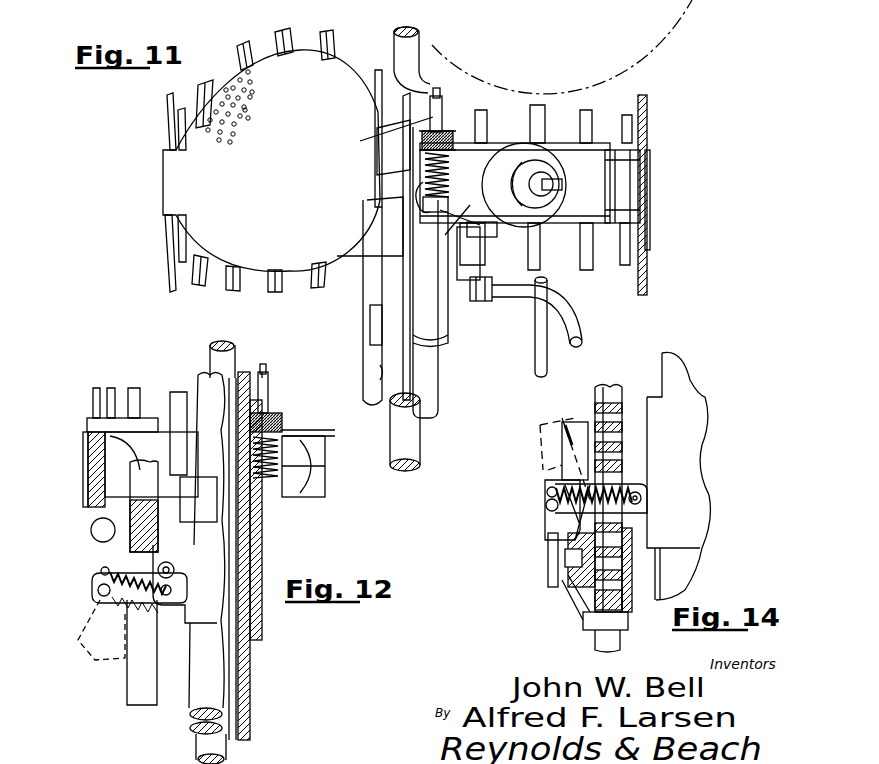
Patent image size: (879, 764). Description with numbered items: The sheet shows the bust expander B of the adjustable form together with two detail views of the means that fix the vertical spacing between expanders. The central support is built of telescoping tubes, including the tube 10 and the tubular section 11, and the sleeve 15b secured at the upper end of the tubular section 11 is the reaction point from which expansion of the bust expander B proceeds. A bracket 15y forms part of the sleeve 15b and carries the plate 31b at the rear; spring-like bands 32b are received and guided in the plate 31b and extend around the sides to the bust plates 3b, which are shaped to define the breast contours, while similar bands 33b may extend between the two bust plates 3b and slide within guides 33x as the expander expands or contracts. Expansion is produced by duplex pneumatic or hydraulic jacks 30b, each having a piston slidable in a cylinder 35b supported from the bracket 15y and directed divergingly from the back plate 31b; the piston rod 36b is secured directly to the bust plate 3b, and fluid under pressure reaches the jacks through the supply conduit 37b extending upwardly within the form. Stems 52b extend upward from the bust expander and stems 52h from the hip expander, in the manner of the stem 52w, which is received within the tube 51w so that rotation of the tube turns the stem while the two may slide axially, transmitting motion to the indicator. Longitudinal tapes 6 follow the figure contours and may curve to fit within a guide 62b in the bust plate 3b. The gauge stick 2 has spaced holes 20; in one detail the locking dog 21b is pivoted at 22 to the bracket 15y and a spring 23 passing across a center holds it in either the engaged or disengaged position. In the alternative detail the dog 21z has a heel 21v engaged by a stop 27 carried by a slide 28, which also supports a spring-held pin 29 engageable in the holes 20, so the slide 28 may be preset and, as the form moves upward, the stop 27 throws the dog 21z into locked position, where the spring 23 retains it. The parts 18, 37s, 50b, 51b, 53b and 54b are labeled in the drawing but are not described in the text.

In FIG. 11, the bust expander B is at (163, 185).
In FIG. 12, the gauge stick 2 is at (125, 685).
In FIG. 14, the gauge stick 2 is at (595, 645).
In FIG. 11, the bust plates 3b is at (271, 161).
In FIG. 11, the longitudinals 6 is at (250, 48).
In FIG. 12, the longitudinals 6 is at (135, 402).
In FIG. 11, the tube 10 is at (440, 62).
In FIG. 12, the tube 10 is at (190, 720).
In FIG. 14, the tube 10 is at (663, 380).
In FIG. 11, the tubular section 11 is at (438, 385).
In FIG. 12, the tubular section 11 is at (200, 692).
In FIG. 14, the tubular section 11 is at (672, 566).
In FIG. 11, the sleeve 15b is at (366, 305).
In FIG. 12, the sleeve 15b is at (257, 515).
In FIG. 14, the sleeve 15b is at (695, 412).
In FIG. 11, the bracket 15y is at (478, 235).
In FIG. 12, the bracket 15y is at (110, 582).
In FIG. 11, the tube 18 is at (396, 50).
In FIG. 12, the tube 18 is at (205, 747).
In FIG. 12, the holes 20 is at (120, 550).
In FIG. 14, the holes 20 is at (622, 578).
In FIG. 12, the locking dog 21b is at (93, 536).
In FIG. 14, the heel 21v is at (553, 512).
In FIG. 14, the dog 21z is at (562, 462).
In FIG. 12, the pivot 22 is at (100, 592).
In FIG. 12, the spring 23 is at (110, 600).
In FIG. 14, the spring 23 is at (598, 488).
In FIG. 14, the stop 27 is at (553, 580).
In FIG. 14, the slide 28 is at (580, 618).
In FIG. 14, the spring-held pin 29 is at (575, 556).
In FIG. 12, the jacks 30b is at (162, 432).
In FIG. 12, the plate 31b is at (86, 455).
In FIG. 11, the spring-like bands 32b is at (647, 183).
In FIG. 12, the spring-like bands 32b is at (92, 440).
In FIG. 11, the bands 33b is at (378, 130).
In FIG. 11, the guides 33x is at (550, 183).
In FIG. 11, the cylinder 35b is at (483, 162).
In FIG. 12, the cylinder 35b is at (161, 477).
In FIG. 11, the piston rod 36b is at (550, 190).
In FIG. 11, the supply conduit 37b is at (584, 325).
In FIG. 12, the supply conduit 37b is at (180, 585).
In FIG. 11, the pipe 37s is at (547, 362).
In FIG. 11, the collar 50b is at (440, 135).
In FIG. 12, the collar 50b is at (282, 420).
In FIG. 11, the pin 51b is at (378, 138).
In FIG. 12, the pin 51b is at (268, 395).
In FIG. 12, the sleeve 51w is at (380, 366).
In FIG. 11, the stems 52b is at (440, 90).
In FIG. 12, the stems 52b is at (266, 372).
In FIG. 11, the stems 52h is at (440, 335).
In FIG. 11, the stem 52w is at (403, 270).
In FIG. 11, the housing 53b is at (452, 250).
In FIG. 12, the housing 53b is at (302, 464).
In FIG. 12, the plate 54b is at (325, 433).
In FIG. 11, the guide 62b is at (650, 205).